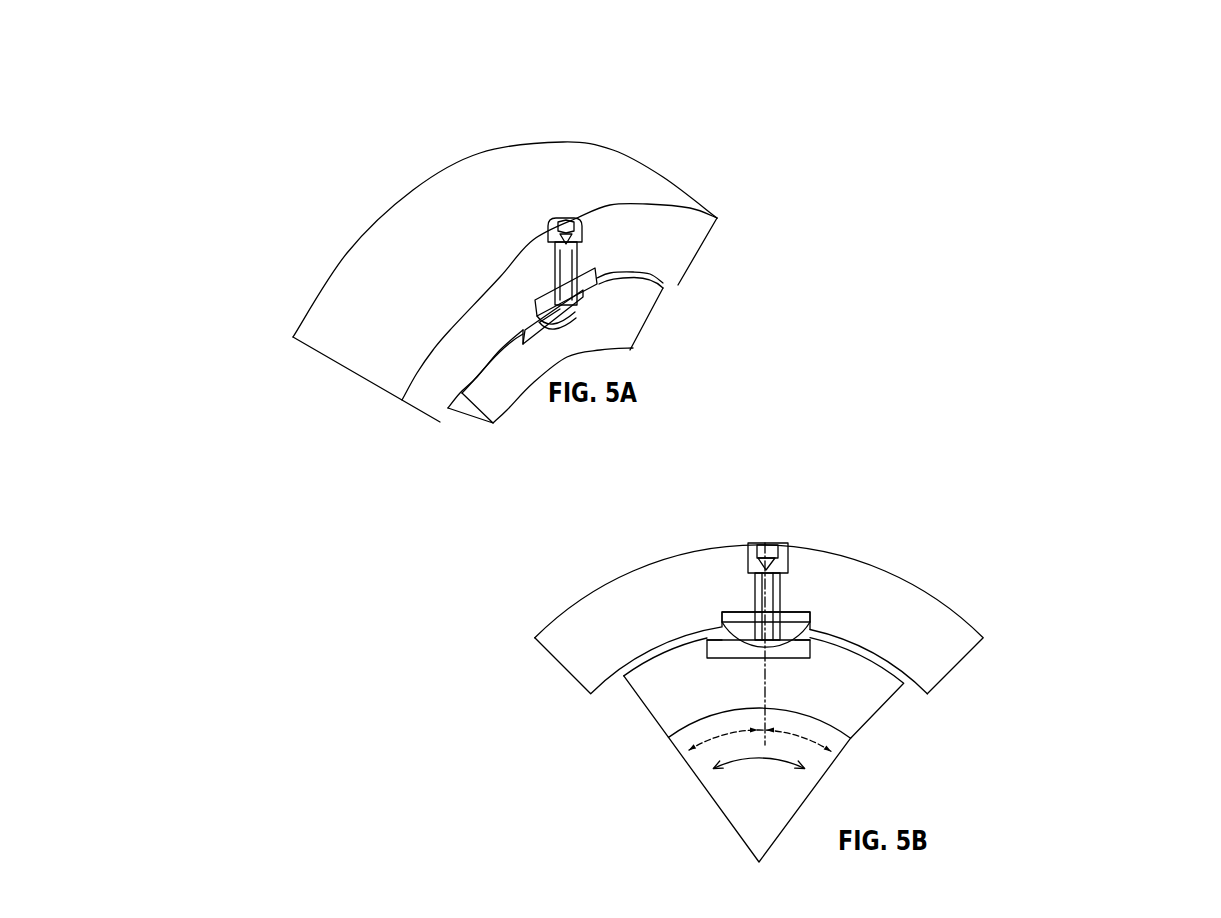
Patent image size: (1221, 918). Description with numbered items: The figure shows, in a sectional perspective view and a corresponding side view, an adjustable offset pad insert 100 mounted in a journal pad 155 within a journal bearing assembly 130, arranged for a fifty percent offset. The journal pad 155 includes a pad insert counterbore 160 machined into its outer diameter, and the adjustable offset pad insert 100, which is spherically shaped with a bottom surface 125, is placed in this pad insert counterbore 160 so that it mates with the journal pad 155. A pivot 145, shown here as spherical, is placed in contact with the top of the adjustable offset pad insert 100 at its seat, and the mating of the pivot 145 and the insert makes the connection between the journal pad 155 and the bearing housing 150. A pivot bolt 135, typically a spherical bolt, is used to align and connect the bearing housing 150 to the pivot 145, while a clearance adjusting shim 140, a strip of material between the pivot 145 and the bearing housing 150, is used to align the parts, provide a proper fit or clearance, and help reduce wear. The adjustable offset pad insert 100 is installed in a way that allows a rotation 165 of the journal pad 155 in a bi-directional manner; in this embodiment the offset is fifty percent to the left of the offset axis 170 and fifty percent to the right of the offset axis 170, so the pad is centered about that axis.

In FIG. 5A, the adjustable offset pad insert 100 is at (588, 300).
In FIG. 5B, the adjustable offset pad insert 100 is at (797, 648).
In FIG. 5B, the bottom surface 125 is at (757, 662).
In FIG. 5A, the journal bearing assembly 130 is at (262, 347).
In FIG. 5B, the journal bearing assembly 130 is at (512, 620).
In FIG. 5A, the pivot bolt 135 is at (563, 255).
In FIG. 5B, the pivot bolt 135 is at (765, 585).
In FIG. 5A, the clearance adjusting shim 140 is at (548, 295).
In FIG. 5B, the clearance adjusting shim 140 is at (745, 616).
In FIG. 5A, the pivot 145 is at (547, 307).
In FIG. 5B, the pivot 145 is at (730, 627).
In FIG. 5A, the bearing housing 150 is at (532, 175).
In FIG. 5B, the bearing housing 150 is at (815, 575).
In FIG. 5A, the journal pad 155 is at (610, 323).
In FIG. 5B, the journal pad 155 is at (832, 688).
In FIG. 5A, the pad insert counterbore 160 is at (673, 360).
In FIG. 5B, the pad insert counterbore 160 is at (725, 664).
In FIG. 5B, the rotation 165 is at (773, 760).
In FIG. 5B, the offset axis 170 is at (770, 663).